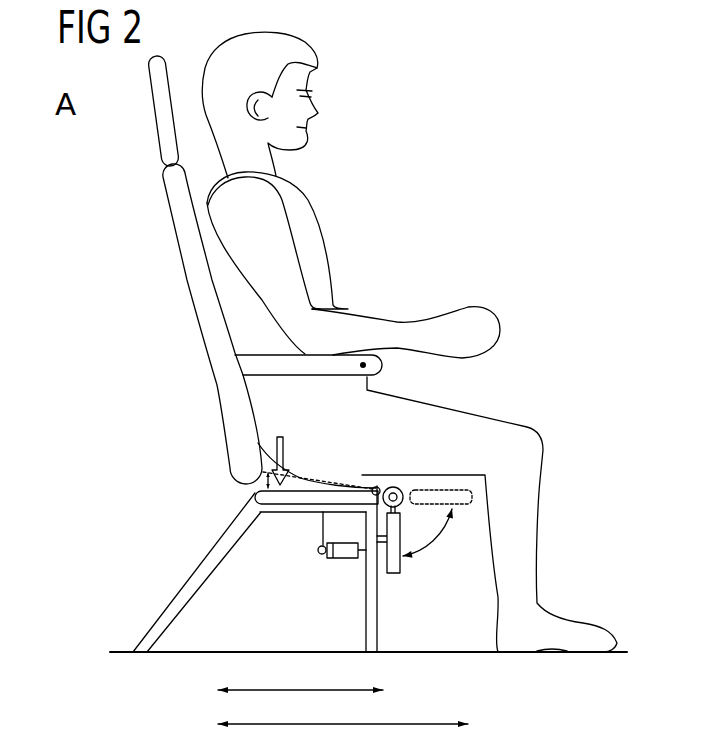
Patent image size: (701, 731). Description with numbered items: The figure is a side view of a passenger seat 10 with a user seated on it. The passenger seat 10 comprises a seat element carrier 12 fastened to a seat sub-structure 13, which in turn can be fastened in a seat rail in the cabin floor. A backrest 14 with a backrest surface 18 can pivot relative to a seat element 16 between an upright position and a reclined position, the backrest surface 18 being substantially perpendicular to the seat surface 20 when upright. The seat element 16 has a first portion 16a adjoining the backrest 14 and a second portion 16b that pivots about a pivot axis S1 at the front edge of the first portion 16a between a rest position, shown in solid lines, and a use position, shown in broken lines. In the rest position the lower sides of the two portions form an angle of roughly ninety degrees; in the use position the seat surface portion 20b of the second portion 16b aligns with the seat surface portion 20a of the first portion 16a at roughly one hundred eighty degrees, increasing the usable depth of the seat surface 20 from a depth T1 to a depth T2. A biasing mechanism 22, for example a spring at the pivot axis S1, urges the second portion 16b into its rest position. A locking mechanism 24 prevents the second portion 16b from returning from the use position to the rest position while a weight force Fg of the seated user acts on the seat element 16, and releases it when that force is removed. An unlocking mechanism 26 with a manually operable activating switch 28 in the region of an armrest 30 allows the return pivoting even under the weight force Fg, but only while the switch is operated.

The passenger seat 10 is at (132, 266).
The seat element carrier 12 is at (277, 512).
The seat sub-structure 13 is at (378, 606).
The backrest 14 is at (228, 377).
The seat element 16 is at (327, 474).
The first portion 16a is at (263, 498).
The second portion 16b is at (400, 567).
The backrest surface 18 is at (190, 193).
The seat surface 20 is at (381, 462).
The seat surface portion 20a is at (351, 484).
The seat surface portion 20b is at (453, 485).
The biasing mechanism 22 is at (422, 520).
The locking mechanism 24 is at (304, 572).
The unlocking mechanism 26 is at (352, 580).
The activating switch 28 is at (366, 365).
The armrest 30 is at (333, 353).
The weight force Fg is at (277, 466).
The pivot axis S1 is at (413, 482).
The depth T1 is at (300, 676).
The depth T2 is at (343, 710).